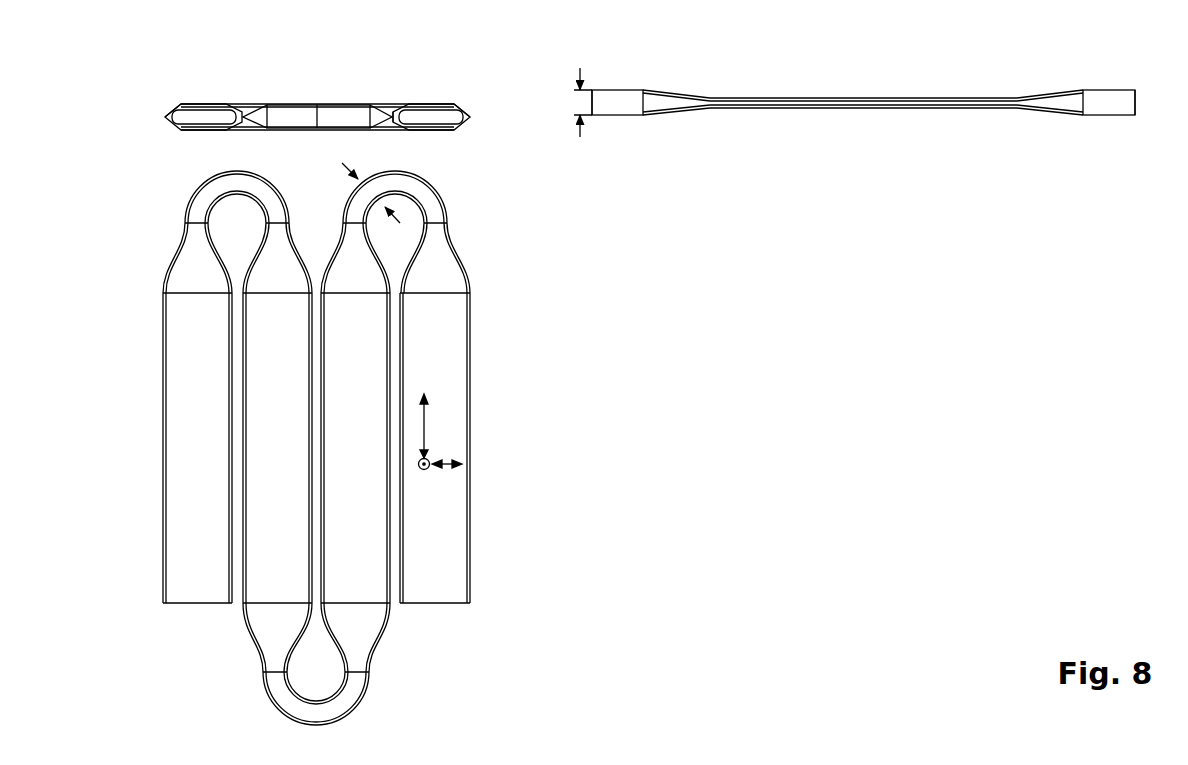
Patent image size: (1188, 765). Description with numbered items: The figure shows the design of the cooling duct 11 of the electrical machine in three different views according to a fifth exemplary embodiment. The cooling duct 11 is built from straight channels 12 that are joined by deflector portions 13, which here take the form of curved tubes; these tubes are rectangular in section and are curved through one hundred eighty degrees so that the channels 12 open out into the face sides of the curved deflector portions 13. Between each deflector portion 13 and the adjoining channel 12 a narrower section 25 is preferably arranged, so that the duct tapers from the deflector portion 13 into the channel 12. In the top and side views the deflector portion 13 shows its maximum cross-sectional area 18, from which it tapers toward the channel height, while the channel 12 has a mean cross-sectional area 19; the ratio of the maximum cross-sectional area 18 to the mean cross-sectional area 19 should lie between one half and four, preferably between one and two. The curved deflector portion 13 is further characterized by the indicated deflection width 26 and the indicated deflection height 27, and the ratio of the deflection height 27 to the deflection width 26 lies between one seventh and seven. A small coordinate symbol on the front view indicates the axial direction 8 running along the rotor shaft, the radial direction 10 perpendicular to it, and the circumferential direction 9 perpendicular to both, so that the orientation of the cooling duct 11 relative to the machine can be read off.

The axial direction 8 is at (430, 405).
The circumferential direction 9 is at (447, 470).
The radial direction 10 is at (435, 458).
The cooling duct 11 is at (468, 131).
The channel 12 is at (450, 363).
The deflector portion 13 is at (372, 688).
The maximum cross-sectional area 18 is at (318, 110).
The mean cross-sectional area 19 is at (471, 117).
The narrower section 25 is at (258, 622).
The deflection width 26 is at (372, 194).
The deflection height 27 is at (578, 98).